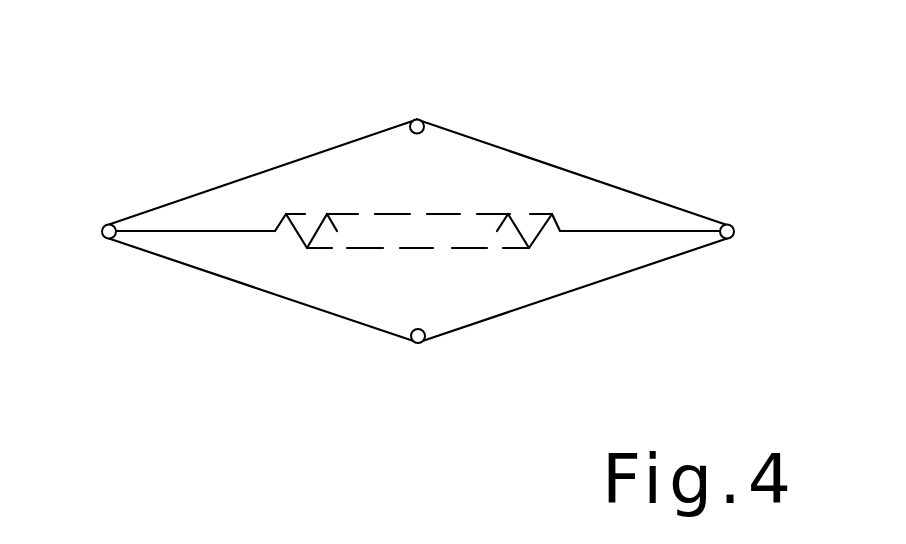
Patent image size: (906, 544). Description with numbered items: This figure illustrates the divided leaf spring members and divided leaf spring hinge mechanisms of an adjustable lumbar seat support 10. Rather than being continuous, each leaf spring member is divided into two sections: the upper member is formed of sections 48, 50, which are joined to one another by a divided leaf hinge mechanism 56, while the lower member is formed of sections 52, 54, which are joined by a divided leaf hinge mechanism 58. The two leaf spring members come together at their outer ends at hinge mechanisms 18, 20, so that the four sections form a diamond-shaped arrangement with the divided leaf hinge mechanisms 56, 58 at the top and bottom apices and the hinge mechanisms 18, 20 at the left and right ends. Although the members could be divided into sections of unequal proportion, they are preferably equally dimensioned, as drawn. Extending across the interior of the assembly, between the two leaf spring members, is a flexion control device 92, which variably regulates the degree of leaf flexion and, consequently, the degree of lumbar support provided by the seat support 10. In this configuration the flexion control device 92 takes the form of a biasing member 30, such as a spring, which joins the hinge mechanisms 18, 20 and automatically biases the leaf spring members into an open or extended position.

The adjustable lumbar seat support 10 is at (313, 135).
The hinge mechanism 18 is at (103, 236).
The hinge mechanism 20 is at (734, 232).
The biasing member 30 is at (543, 235).
The section 48 is at (533, 153).
The section 50 is at (200, 190).
The section 52 is at (500, 318).
The section 54 is at (186, 266).
The divided leaf hinge mechanism 56 is at (418, 119).
The divided leaf hinge mechanism 58 is at (418, 343).
The flexion control device 92 is at (419, 258).